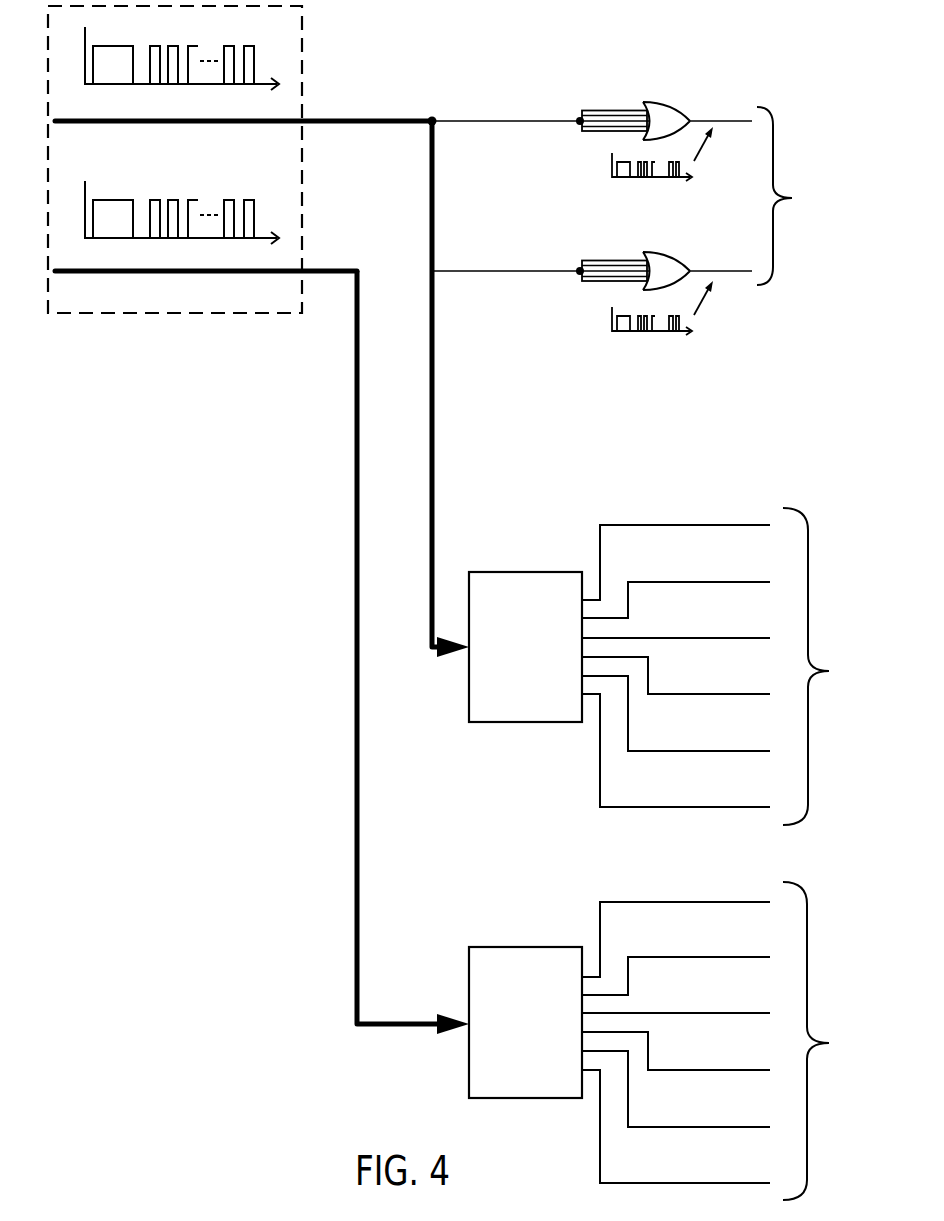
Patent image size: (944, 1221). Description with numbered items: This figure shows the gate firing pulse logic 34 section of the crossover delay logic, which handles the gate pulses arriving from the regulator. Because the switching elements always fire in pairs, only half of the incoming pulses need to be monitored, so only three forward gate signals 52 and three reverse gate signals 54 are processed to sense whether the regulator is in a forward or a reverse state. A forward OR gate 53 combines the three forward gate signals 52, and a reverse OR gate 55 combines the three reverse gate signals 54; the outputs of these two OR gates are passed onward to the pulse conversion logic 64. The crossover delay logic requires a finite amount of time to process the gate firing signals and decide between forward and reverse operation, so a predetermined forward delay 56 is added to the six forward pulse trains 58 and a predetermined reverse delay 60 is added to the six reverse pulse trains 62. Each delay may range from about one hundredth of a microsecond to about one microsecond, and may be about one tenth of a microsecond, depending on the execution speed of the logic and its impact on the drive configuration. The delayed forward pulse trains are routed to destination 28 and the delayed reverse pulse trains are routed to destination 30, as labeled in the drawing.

The gate firing pulse logic 34 is at (144, 330).
The forward gate signals 52 is at (620, 110).
The forward OR gate 53 is at (670, 102).
The reverse gate signals 54 is at (620, 260).
The reverse OR gate 55 is at (670, 252).
The forward delay 56 is at (527, 572).
The forward pulse trains 58 is at (434, 426).
The reverse delay 60 is at (530, 947).
The reverse pulse trains 62 is at (356, 817).
The pulse conversion logic 64 is at (802, 196).
The destination 28 is at (836, 666).
The destination 30 is at (834, 1041).